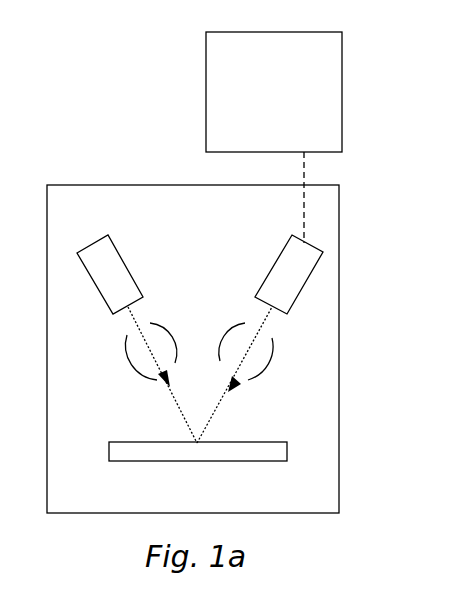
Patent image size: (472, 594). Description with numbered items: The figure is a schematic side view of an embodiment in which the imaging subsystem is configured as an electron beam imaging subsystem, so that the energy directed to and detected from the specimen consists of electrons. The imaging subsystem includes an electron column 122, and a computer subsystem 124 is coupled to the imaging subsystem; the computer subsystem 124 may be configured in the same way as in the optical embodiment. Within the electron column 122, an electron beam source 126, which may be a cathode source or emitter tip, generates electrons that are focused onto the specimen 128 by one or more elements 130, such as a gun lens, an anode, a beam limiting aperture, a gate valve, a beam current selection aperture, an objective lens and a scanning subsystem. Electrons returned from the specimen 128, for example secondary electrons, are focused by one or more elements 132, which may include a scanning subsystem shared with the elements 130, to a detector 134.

The computer subsystem 124 is at (256, 130).
The electron column 122 is at (340, 278).
The electron beam source 126 is at (113, 245).
The detector 134 is at (282, 250).
The one or more elements 130 is at (138, 366).
The one or more elements 132 is at (268, 366).
The specimen 128 is at (245, 440).